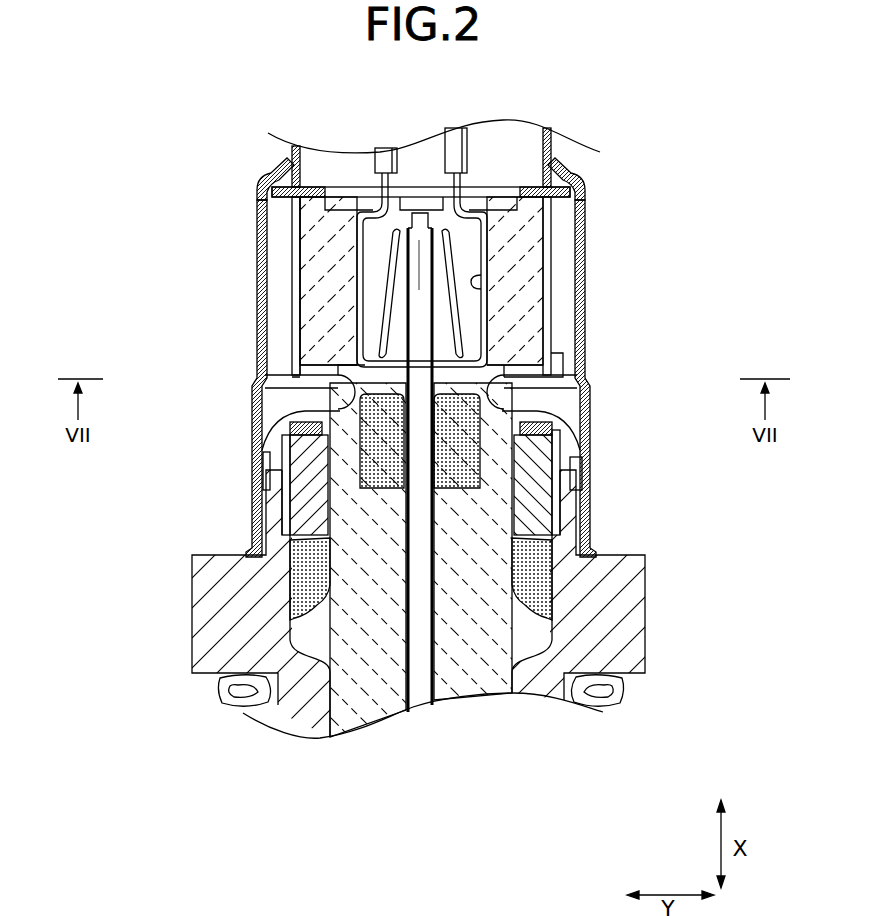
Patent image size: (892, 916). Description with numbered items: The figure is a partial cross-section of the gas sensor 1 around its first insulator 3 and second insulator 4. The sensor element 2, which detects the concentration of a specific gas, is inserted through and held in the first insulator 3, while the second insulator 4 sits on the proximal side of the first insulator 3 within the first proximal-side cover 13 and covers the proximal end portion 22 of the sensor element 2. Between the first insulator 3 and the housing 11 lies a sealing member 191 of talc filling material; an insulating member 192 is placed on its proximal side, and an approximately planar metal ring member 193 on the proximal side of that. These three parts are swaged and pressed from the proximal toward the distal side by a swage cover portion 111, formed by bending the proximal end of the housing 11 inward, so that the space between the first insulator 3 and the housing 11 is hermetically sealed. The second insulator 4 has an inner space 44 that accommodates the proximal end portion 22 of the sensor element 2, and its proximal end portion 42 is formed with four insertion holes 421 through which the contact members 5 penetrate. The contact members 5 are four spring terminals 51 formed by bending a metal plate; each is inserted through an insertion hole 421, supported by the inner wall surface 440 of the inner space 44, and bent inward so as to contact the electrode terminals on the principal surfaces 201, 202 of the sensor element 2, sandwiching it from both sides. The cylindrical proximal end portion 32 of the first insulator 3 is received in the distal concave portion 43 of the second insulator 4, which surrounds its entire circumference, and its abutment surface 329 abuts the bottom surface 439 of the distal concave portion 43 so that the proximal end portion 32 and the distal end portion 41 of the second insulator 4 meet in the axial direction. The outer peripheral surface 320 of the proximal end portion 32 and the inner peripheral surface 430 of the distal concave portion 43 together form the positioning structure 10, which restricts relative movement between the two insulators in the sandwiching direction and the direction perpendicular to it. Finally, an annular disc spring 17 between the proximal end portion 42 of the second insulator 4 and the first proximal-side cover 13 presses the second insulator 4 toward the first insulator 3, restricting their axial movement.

The gas sensor 1 is at (172, 698).
The sensor element 2 is at (413, 630).
The first insulator 3 is at (347, 580).
The second insulator 4 is at (318, 316).
The contact members 5 is at (552, 215).
The positioning structure 10 is at (323, 520).
The housing 11 is at (612, 618).
The first proximal-side cover 13 is at (590, 465).
The disc spring 17 is at (290, 166).
The proximal end portion of the sensor element 22 is at (493, 230).
The proximal end portion of the first insulator 32 is at (345, 440).
The distal end portion of the second insulator 41 is at (585, 380).
The proximal end portion of the second insulator 42 is at (292, 191).
The distal concave portion 43 is at (577, 437).
The inner space 44 is at (372, 300).
The spring terminals 51 is at (295, 226).
The swage cover portion 111 is at (290, 412).
The sealing member 191 is at (533, 570).
The insulating member 192 is at (558, 490).
The metal ring member 193 is at (292, 438).
The principal surface 201 is at (556, 540).
The principal surface 202 is at (300, 552).
The outer peripheral surface 320 is at (345, 372).
The abutment surface 329 is at (562, 366).
The insertion holes 421 is at (380, 205).
The inner peripheral surface 430 is at (338, 384).
The bottom surface 439 is at (458, 322).
The inner wall surface 440 is at (476, 282).